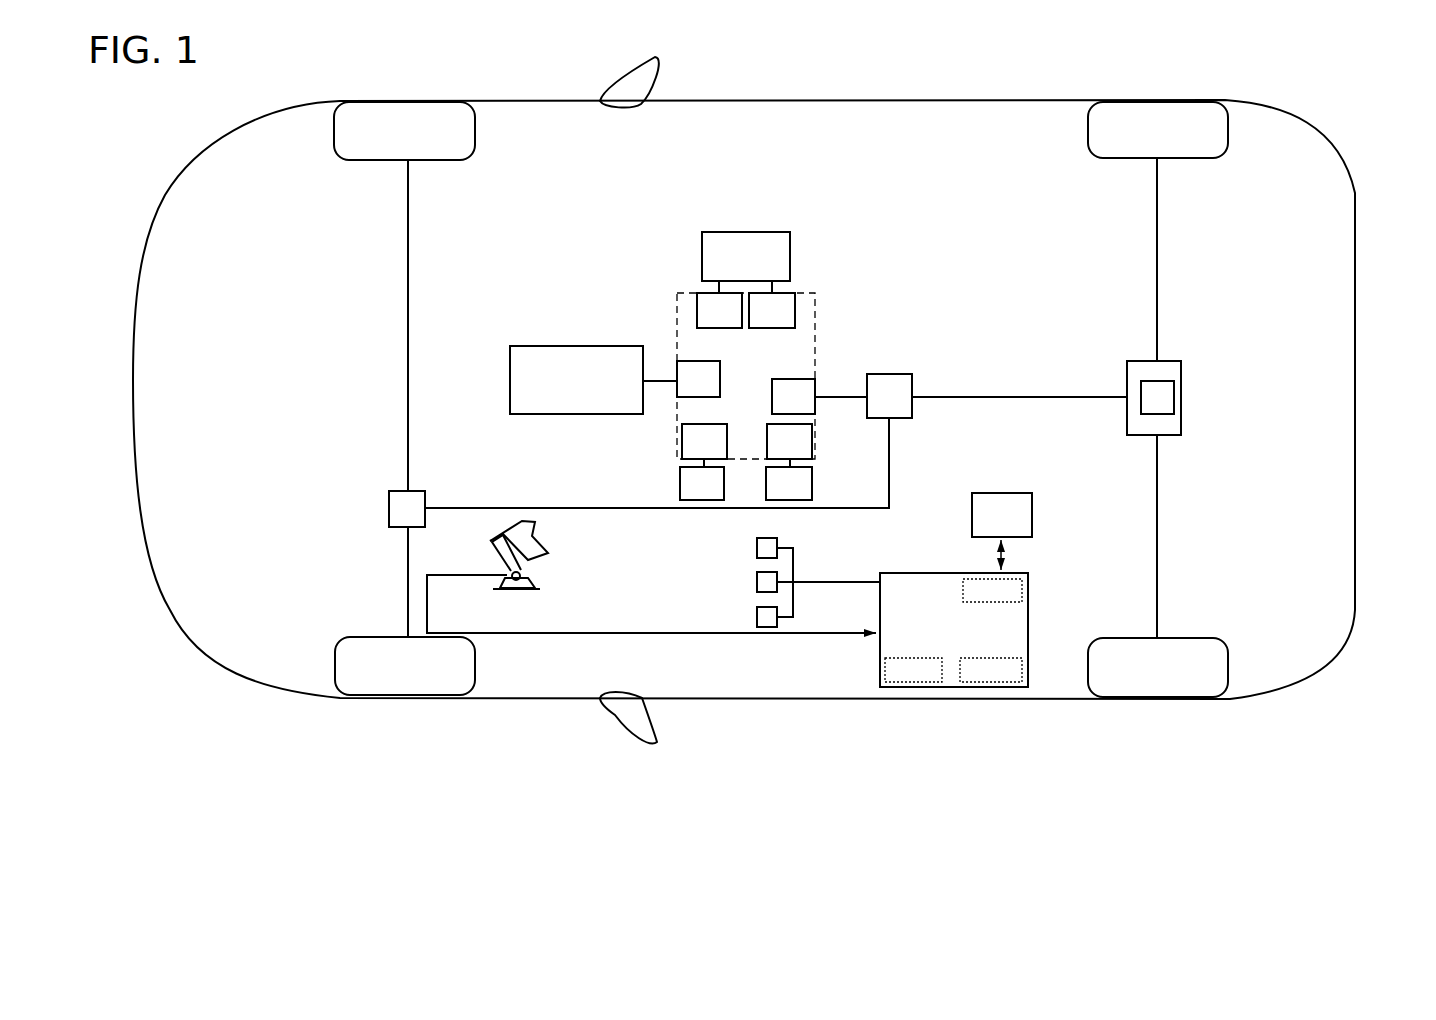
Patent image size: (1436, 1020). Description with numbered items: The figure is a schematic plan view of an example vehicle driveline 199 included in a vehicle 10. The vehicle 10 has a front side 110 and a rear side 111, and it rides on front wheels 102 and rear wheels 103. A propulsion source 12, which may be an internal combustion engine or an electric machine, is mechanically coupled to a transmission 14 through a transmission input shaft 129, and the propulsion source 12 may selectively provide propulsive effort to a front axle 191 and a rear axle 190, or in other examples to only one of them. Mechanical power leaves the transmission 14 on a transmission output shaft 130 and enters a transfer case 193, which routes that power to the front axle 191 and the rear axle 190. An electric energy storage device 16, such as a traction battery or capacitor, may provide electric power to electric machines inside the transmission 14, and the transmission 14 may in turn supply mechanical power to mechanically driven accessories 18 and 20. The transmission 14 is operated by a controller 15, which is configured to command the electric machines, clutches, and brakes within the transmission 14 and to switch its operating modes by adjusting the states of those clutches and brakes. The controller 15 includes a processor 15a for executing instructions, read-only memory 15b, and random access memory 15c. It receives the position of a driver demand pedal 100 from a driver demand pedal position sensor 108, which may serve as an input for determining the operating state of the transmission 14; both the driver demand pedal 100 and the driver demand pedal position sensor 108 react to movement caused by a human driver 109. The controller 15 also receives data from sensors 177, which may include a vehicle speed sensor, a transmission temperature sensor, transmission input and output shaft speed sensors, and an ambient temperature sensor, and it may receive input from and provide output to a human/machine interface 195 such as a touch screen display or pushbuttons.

The vehicle 10 is at (975, 100).
The propulsion source 12 is at (576, 380).
The transmission 14 is at (800, 293).
The controller 15 is at (954, 630).
The processor 15a is at (913, 670).
The read-only memory 15b is at (991, 670).
The random access memory 15c is at (992, 591).
The electric energy storage device 16 is at (746, 262).
The mechanically driven accessories 18 is at (702, 479).
The mechanically driven accessories 20 is at (789, 479).
The driver demand pedal 100 is at (497, 542).
The front wheels 102 is at (330, 160).
The rear wheels 103 is at (1233, 172).
The driver demand pedal position sensor 108 is at (530, 577).
The human driver 109 is at (540, 540).
The front side 110 is at (103, 195).
The rear side 111 is at (1400, 135).
The transmission input shaft 129 is at (656, 378).
The transmission output shaft 130 is at (857, 396).
The sensors 177 is at (800, 560).
The rear axle 190 is at (1168, 452).
The front axle 191 is at (392, 482).
The transfer case 193 is at (915, 412).
The human/machine interface 195 is at (1002, 531).
The vehicle driveline 199 is at (640, 205).